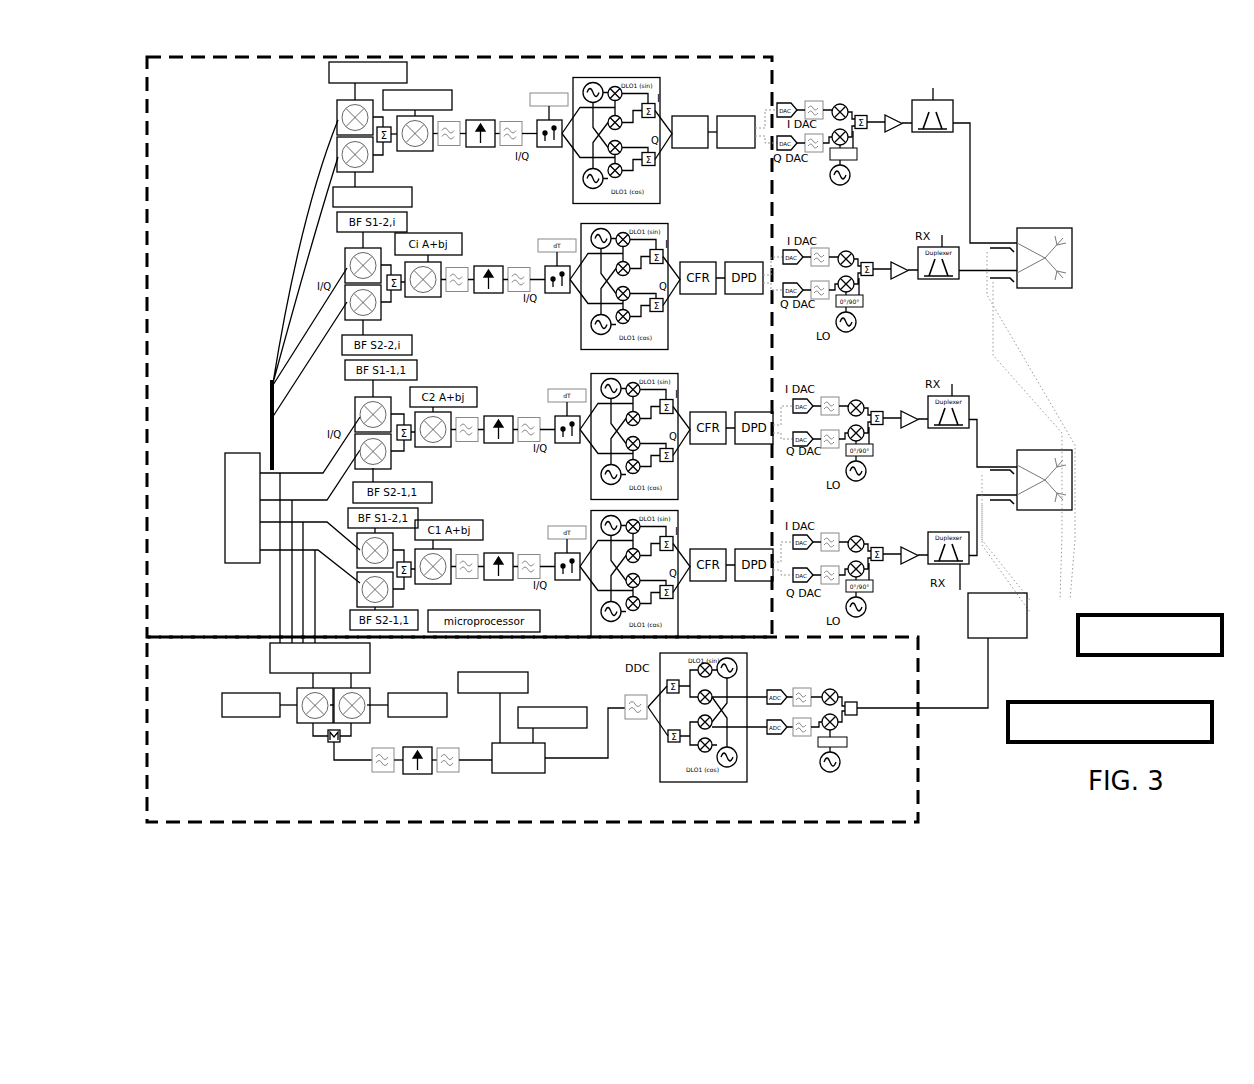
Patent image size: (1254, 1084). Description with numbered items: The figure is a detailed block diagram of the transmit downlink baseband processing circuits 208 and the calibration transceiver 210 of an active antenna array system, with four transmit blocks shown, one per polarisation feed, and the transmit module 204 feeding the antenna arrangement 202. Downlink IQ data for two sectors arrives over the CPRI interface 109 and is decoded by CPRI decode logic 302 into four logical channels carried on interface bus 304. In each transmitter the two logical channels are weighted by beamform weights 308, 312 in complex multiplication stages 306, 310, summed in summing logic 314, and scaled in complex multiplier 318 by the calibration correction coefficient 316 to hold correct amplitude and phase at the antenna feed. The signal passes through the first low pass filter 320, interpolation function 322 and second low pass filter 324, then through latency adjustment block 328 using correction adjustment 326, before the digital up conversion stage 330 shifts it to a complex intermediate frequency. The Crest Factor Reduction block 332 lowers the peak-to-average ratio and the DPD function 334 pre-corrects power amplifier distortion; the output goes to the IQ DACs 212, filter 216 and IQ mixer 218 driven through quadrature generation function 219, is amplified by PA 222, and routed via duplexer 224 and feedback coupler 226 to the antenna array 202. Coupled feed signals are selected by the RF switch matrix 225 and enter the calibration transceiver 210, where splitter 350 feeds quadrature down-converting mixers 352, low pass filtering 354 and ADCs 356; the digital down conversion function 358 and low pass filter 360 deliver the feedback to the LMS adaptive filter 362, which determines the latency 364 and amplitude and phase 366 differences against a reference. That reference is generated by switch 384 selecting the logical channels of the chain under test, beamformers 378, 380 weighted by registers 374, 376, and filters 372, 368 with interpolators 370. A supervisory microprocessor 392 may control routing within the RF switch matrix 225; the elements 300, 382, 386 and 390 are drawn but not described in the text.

The CPRI interface 109 is at (225, 504).
The antenna arrangement 202 is at (1058, 228).
The transmit module 204 is at (788, 176).
The transmit downlink baseband processing circuits 208 is at (148, 267).
The calibration transceiver 210 is at (918, 770).
The IQ DACs 212 is at (779, 103).
The filter 216 is at (807, 101).
The IQ mixer 218 is at (842, 107).
The quadrature generation signal processing function 219 is at (856, 160).
The PA 222 is at (894, 131).
The duplexer 224 is at (950, 100).
The RF switch matrix 225 is at (1020, 638).
The feedback coupler 226 is at (982, 243).
The beamforming transmitter system 300 is at (1059, 138).
The CPRI decode logic 302 is at (238, 453).
The four logical channel output 304 is at (273, 383).
The complex multiplication stage 306 is at (337, 117).
The beamform weight 308 is at (329, 72).
The complex multiplication stage 310 is at (337, 155).
The beamform weight 312 is at (333, 200).
The summing logic 314 is at (388, 142).
The calibration correction coefficient 316 is at (433, 93).
The complex multiplier 318 is at (419, 151).
The first low pass filter 320 is at (452, 122).
The interpolation function 322 is at (479, 147).
The second low pass filter 324 is at (517, 145).
The correction adjustment 326 is at (542, 93).
The latency adjustment block 328 is at (560, 147).
The digital up conversion stage 330 is at (585, 203).
The Crest Factor Reduction signal processing block 332 is at (692, 116).
The DPD function 334 is at (726, 148).
The splitter 350 is at (856, 702).
The quadrature down-converting mixers 352 is at (842, 672).
The low pass filtering 354 is at (808, 688).
The ADCs 356 is at (775, 690).
The digital down conversion function 358 is at (694, 782).
The low pass filter 360 is at (632, 720).
The LMS adaptive filter 362 is at (546, 772).
The time difference 364 is at (548, 707).
The amplitude and phase difference 366 is at (494, 672).
The filter 368 is at (446, 773).
The interpolator 370 is at (408, 773).
The filter 372 is at (375, 773).
The beamform weight register 374 is at (222, 705).
The beamform weight register 376 is at (447, 706).
The complex multiplier beamformer 378 is at (300, 736).
The complex multiplier beamformer 380 is at (366, 688).
The summer 382 is at (328, 742).
The switch 384 is at (270, 655).
The CPRI signal lines 386 is at (292, 600).
The storage/memory 390 is at (1135, 702).
The supervisory microprocessor 392 is at (1130, 615).